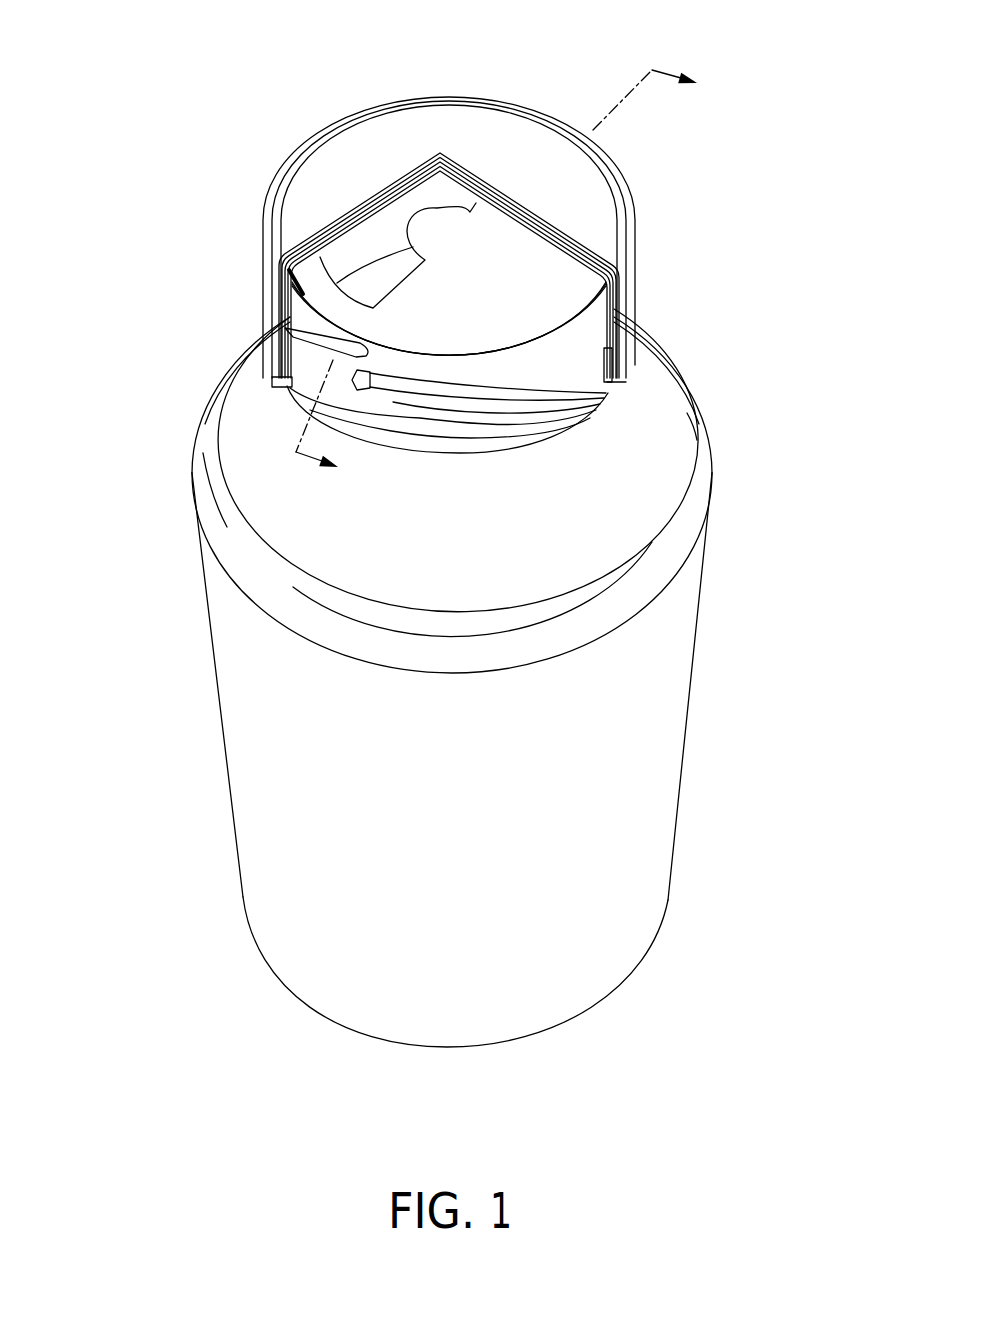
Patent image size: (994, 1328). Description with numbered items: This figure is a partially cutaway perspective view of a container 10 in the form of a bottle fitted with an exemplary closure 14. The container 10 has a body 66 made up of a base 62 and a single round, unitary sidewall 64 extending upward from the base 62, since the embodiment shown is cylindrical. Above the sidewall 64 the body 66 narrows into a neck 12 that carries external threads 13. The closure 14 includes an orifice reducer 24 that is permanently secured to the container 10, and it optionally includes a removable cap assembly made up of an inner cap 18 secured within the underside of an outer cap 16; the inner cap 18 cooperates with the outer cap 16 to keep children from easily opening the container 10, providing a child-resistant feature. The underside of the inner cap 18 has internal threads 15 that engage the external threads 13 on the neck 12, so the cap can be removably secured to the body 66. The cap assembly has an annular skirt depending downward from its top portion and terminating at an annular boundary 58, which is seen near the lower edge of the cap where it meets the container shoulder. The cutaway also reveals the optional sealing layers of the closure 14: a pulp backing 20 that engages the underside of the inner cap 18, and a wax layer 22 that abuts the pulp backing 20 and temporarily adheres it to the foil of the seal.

The container 10 is at (160, 566).
The neck 12 is at (283, 387).
The external threads 13 is at (390, 400).
The closure 14 is at (637, 350).
The internal threads 15 is at (513, 313).
The outer cap 16 is at (558, 143).
The inner cap 18 is at (287, 303).
The pulp backing 20 is at (342, 230).
The wax layer 22 is at (375, 227).
The orifice reducer 24 is at (620, 413).
The annular boundary 58 is at (278, 378).
The base 62 is at (532, 1035).
The sidewall 64 is at (663, 723).
The body 66 is at (198, 806).